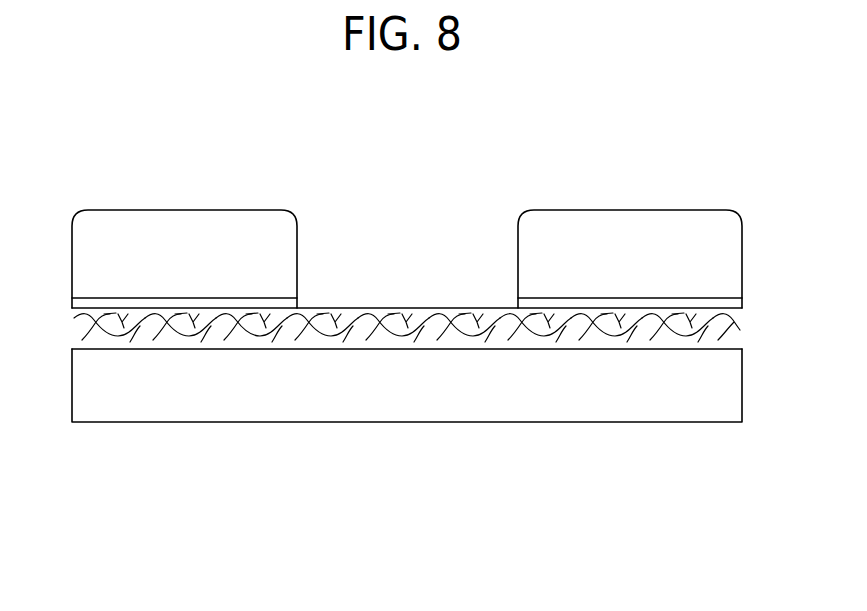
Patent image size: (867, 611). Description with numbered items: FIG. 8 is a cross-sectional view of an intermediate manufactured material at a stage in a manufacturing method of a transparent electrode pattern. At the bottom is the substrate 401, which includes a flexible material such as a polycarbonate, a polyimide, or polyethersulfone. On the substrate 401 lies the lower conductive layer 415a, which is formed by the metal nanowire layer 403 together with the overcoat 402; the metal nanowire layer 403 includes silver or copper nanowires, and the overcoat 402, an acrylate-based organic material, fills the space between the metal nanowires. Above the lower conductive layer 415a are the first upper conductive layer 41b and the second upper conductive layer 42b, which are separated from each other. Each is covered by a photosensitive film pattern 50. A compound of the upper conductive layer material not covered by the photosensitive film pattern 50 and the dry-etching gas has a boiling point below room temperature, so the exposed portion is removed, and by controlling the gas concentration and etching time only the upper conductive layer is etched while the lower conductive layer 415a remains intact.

The photosensitive film pattern 50 is at (181, 228).
The first upper conductive layer 41b is at (178, 303).
The second upper conductive layer 42b is at (658, 300).
The substrate 401 is at (290, 398).
The overcoat 402 is at (507, 332).
The metal nanowire layer 403 is at (562, 335).
The lower conductive layer 415a is at (407, 410).